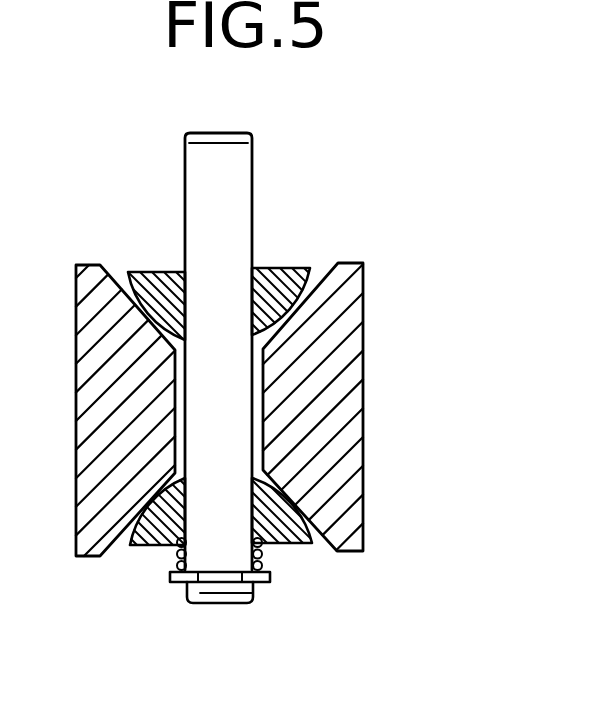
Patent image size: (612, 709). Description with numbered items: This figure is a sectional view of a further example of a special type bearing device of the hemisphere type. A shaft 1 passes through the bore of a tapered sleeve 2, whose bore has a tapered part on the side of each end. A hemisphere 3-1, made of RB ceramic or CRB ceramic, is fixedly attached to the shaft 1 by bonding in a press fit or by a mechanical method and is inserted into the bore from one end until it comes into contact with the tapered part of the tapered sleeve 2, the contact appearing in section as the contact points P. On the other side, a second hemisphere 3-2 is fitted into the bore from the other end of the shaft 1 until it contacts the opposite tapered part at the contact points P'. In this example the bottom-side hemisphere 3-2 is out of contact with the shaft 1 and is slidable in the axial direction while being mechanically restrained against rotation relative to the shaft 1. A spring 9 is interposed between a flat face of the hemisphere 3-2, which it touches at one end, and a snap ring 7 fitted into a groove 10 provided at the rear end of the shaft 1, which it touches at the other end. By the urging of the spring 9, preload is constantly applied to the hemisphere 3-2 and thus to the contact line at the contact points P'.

The shaft 1 is at (240, 186).
The tapered sleeve 2 is at (345, 360).
The hemisphere 3-1 is at (158, 286).
The hemisphere 3-2 is at (283, 512).
The contact points P is at (92, 329).
The contact points P' is at (85, 483).
The snap ring 7 is at (270, 576).
The spring 9 is at (177, 553).
The groove 10 is at (213, 580).